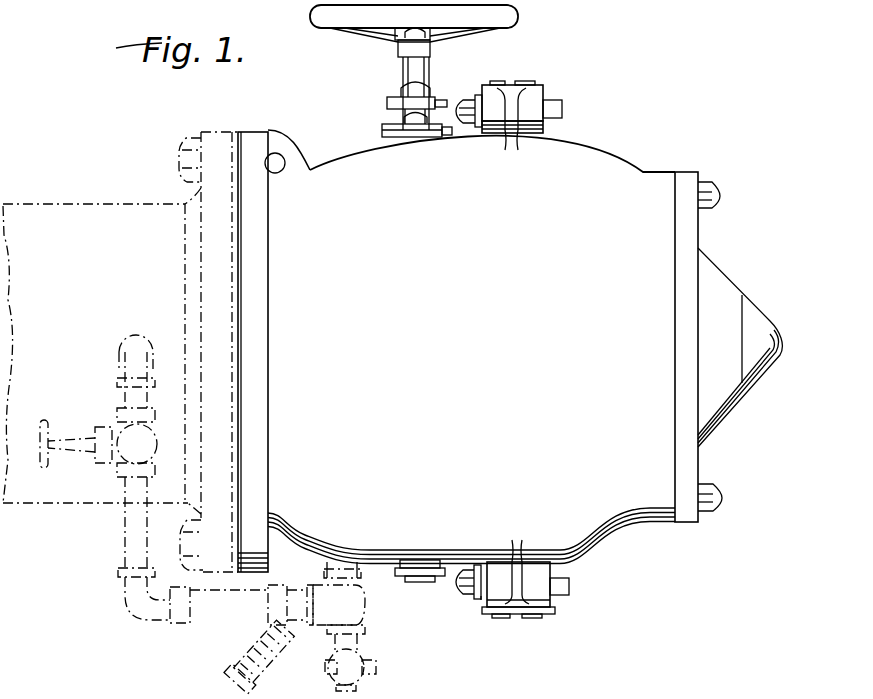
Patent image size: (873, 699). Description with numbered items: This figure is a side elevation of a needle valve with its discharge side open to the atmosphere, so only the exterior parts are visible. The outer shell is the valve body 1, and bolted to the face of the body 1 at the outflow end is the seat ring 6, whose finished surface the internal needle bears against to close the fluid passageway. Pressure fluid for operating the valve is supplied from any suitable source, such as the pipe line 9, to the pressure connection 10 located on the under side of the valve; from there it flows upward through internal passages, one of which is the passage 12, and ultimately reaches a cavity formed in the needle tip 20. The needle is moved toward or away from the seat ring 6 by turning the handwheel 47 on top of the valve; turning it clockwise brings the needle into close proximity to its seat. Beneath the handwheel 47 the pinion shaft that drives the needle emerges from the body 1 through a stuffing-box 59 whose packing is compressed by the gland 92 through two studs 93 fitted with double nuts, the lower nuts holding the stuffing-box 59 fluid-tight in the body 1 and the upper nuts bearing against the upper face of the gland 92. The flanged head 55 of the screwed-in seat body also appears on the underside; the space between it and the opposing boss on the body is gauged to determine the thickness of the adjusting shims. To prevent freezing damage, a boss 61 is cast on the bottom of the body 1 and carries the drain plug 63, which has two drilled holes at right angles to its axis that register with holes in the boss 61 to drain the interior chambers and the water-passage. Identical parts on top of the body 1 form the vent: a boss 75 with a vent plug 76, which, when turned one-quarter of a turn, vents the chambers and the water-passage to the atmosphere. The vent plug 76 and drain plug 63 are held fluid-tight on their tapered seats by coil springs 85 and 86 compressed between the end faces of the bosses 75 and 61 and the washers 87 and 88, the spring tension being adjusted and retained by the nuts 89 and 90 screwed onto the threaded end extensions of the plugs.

The body 1 is at (608, 170).
The seat ring 6 is at (690, 228).
The pipe line 9 is at (106, 204).
The pressure connection 10 is at (330, 550).
The passage 12 is at (268, 622).
The needle tip 20 is at (748, 304).
The handwheel 47 is at (518, 22).
The flanged head 55 is at (420, 583).
The stuffing-box 59 is at (390, 133).
The boss 61 is at (522, 615).
The drain plug 63 is at (560, 598).
The boss 75 is at (546, 90).
The vent plug 76 is at (564, 108).
The coil spring 85 is at (472, 136).
The coil spring 86 is at (488, 585).
The washer 87 is at (468, 105).
The washer 88 is at (478, 600).
The nut 89 is at (460, 112).
The nut 90 is at (462, 590).
The gland 92 is at (389, 103).
The studs 93 is at (400, 89).